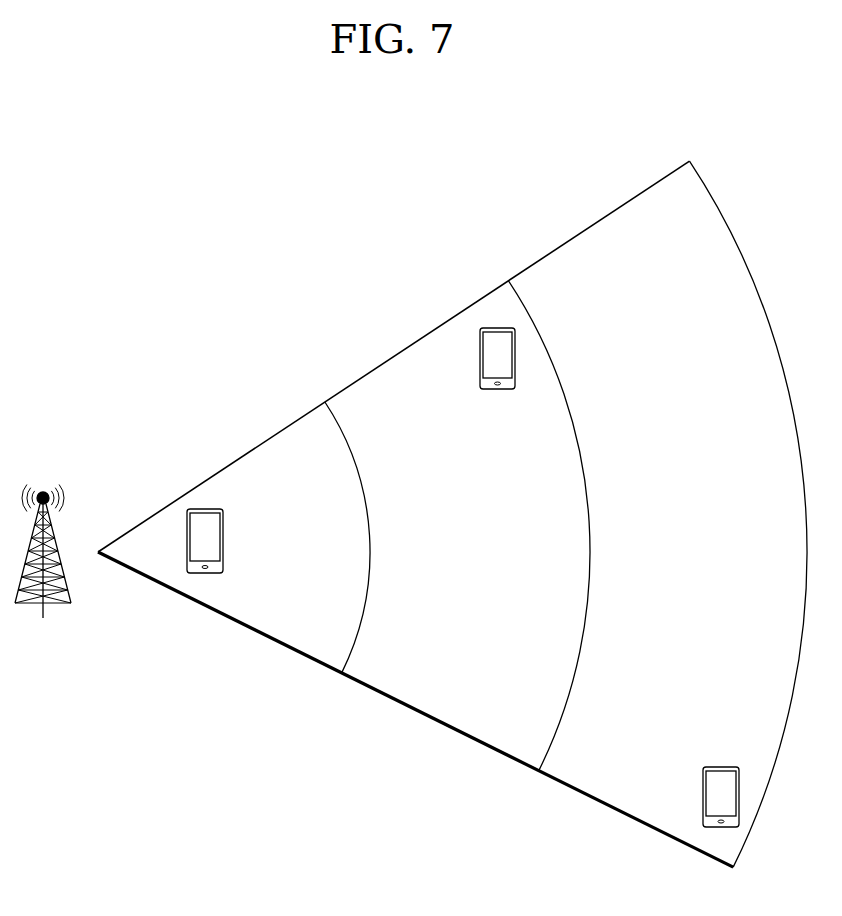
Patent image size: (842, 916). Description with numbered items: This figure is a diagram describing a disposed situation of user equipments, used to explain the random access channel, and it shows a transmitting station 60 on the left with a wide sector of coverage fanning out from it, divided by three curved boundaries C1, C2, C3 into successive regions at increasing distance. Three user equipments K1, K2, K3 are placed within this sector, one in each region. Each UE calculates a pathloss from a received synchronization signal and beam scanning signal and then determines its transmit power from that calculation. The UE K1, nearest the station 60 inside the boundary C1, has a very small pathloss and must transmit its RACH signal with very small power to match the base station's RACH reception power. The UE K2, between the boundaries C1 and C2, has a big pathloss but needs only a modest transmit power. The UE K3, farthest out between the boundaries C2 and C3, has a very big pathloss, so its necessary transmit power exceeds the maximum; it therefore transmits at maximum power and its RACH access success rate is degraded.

The base station 60 is at (55, 552).
The user equipment K1 is at (205, 541).
The user equipment K2 is at (497, 358).
The user equipment K3 is at (721, 797).
The first coverage boundary C1 is at (341, 557).
The second coverage boundary C2 is at (550, 544).
The third coverage boundary C3 is at (749, 532).